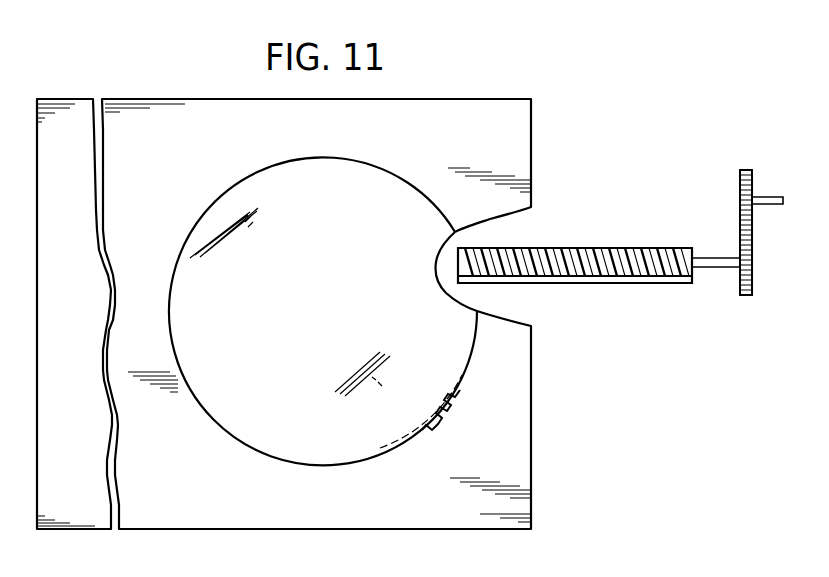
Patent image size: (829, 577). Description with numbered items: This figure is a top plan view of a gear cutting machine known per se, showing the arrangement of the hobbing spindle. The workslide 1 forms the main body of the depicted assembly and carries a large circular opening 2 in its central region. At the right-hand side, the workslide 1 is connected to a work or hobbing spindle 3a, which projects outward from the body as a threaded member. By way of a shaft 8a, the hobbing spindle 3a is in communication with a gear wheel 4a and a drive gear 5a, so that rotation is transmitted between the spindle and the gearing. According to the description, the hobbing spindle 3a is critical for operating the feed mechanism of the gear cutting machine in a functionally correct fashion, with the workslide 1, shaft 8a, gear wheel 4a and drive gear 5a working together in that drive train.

The workslide 1 is at (176, 117).
The circular bore 2 is at (266, 188).
The hobbing spindle 3a is at (573, 254).
The gear wheel 4a is at (748, 296).
The drive gear 5a is at (740, 172).
The shaft 8a is at (718, 264).